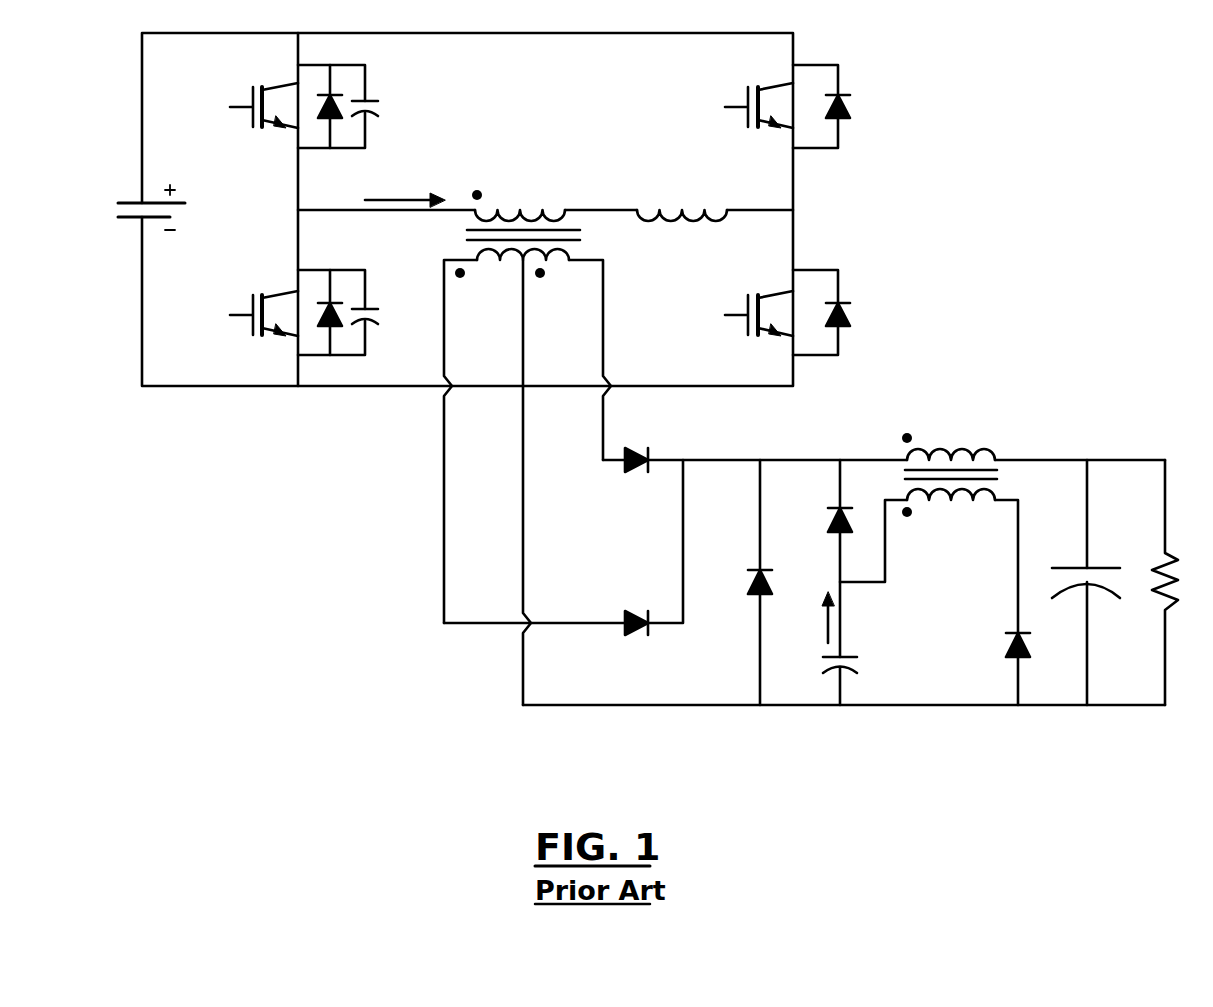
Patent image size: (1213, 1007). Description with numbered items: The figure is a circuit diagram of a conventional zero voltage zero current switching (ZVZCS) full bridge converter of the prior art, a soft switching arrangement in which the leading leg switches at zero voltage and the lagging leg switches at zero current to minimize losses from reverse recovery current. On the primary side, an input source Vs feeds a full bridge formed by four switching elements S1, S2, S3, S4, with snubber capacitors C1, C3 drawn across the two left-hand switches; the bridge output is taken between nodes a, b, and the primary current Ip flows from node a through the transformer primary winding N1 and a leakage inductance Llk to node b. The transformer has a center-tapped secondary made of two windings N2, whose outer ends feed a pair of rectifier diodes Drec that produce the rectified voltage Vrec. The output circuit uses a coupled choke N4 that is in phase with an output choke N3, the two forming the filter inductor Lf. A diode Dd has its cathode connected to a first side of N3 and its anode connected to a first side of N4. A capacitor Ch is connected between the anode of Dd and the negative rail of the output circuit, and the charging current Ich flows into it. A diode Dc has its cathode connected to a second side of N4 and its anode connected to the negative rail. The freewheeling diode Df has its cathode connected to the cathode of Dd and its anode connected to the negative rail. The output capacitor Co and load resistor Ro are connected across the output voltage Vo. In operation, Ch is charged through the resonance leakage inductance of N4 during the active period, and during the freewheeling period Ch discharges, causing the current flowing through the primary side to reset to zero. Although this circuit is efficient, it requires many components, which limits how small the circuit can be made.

The input DC voltage source Vs is at (176, 207).
The switch S1 (IGBT) S1 is at (238, 105).
The switch S2 (IGBT) S2 is at (755, 312).
The switch S3 (IGBT) S3 is at (236, 313).
The switch S4 (IGBT) S4 is at (755, 106).
The snubber capacitor C1 is at (361, 106).
The snubber capacitor C3 is at (363, 312).
The bridge node a is at (311, 192).
The bridge node b is at (814, 205).
The primary current Ip is at (405, 178).
The transformer primary winding N1 is at (523, 194).
The transformer secondary windings N2 is at (527, 477).
The leakage inductance Llk is at (682, 185).
The rectifier diodes Drec is at (675, 569).
The rectified voltage Vrec is at (734, 429).
The diode Df is at (739, 582).
The diode Dd is at (817, 558).
The charging current Ich is at (812, 624).
The capacitor Ch is at (868, 679).
The output choke N3 is at (937, 422).
The coupled choke N4 is at (929, 561).
The output filter inductor Lf is at (963, 433).
The diode Dc is at (990, 660).
The output capacitor Co is at (1080, 582).
The load resistor Ro is at (1148, 582).
The output voltage Vo is at (1133, 425).